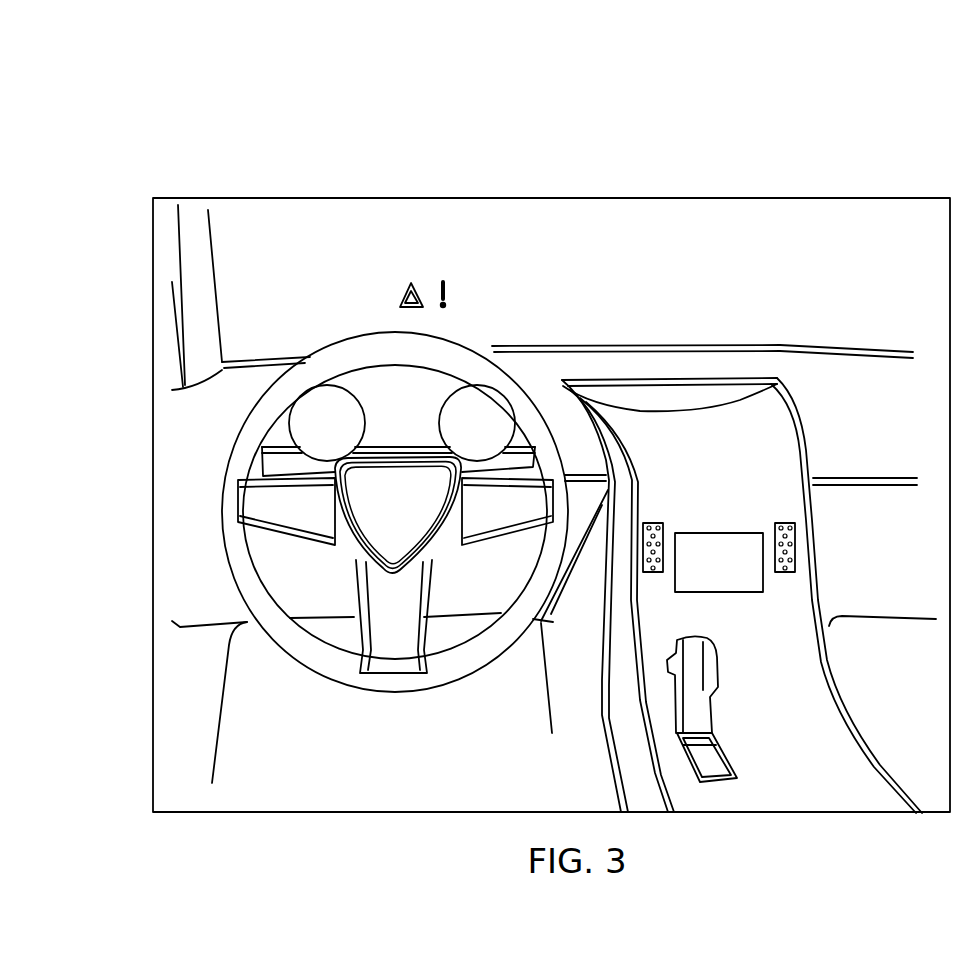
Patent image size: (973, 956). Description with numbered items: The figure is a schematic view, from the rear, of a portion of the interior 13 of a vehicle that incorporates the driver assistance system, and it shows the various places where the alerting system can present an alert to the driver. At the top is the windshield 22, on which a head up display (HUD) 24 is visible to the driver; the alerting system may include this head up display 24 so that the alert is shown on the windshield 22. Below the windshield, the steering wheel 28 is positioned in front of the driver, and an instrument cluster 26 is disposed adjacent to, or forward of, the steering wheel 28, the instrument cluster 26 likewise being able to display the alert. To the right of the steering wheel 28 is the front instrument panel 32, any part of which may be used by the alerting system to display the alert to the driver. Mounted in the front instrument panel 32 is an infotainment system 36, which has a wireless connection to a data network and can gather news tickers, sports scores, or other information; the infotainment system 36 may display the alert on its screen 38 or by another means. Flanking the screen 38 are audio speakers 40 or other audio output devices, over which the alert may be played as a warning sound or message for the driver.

The interior 13 is at (914, 88).
The windshield 22 is at (485, 210).
The head up display (HUD) 24 is at (455, 288).
The instrument cluster 26 is at (350, 424).
The steering wheel 28 is at (395, 682).
The front instrument panel 32 is at (785, 433).
The infotainment system 36 is at (742, 595).
The screen 38 is at (735, 548).
The audio speakers 40 is at (655, 523).